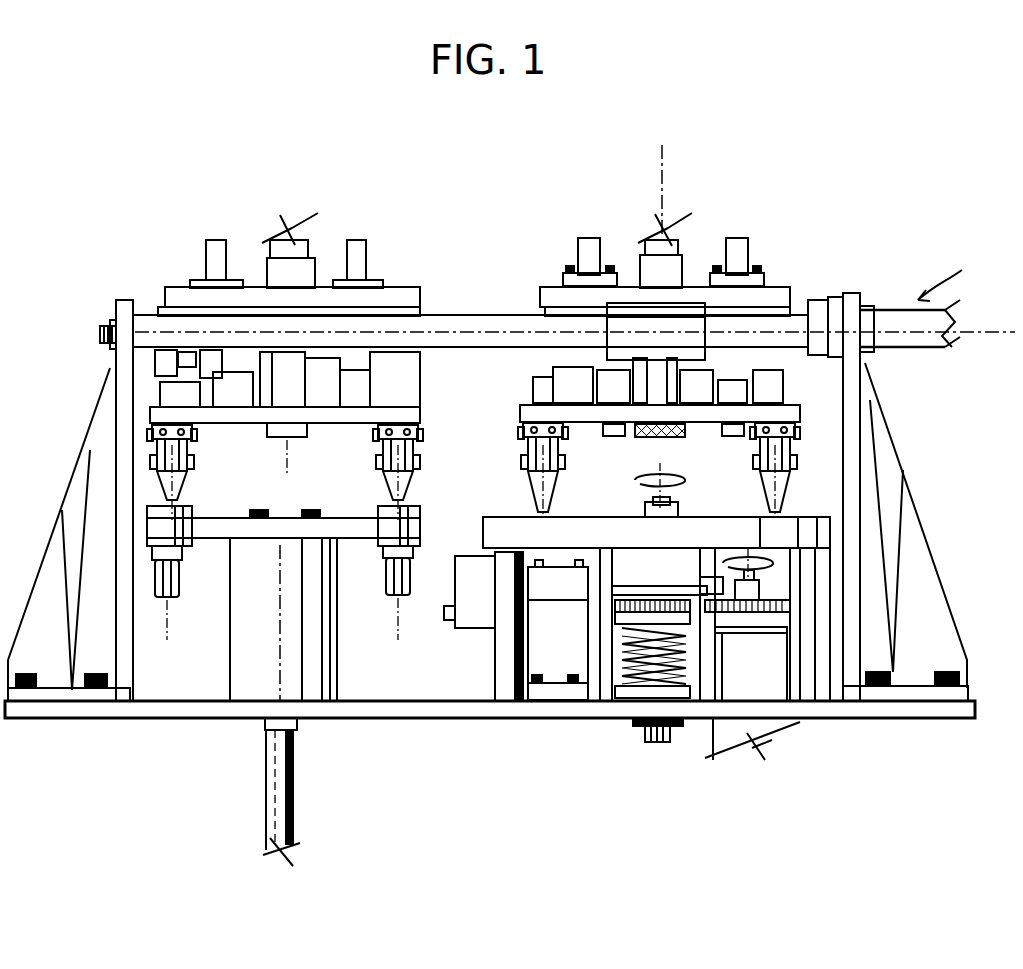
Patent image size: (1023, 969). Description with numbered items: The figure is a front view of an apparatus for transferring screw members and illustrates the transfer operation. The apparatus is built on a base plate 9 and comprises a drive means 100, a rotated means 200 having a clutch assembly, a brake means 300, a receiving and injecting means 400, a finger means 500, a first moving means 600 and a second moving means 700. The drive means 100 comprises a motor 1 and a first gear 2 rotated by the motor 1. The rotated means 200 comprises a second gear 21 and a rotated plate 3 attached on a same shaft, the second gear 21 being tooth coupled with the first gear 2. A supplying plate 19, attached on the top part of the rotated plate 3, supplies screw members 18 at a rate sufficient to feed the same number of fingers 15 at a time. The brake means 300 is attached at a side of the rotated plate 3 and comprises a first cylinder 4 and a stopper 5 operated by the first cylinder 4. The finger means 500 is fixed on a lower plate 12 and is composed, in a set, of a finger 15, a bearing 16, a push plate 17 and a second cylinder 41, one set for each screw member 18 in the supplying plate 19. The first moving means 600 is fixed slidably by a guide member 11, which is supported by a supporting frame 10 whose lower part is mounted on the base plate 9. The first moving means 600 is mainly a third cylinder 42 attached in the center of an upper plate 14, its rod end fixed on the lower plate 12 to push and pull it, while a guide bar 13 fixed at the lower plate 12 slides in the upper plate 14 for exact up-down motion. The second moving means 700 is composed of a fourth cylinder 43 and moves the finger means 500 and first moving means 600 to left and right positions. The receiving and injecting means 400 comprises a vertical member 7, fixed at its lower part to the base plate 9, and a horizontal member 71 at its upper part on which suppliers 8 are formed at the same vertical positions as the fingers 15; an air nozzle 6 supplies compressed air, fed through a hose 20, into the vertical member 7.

The motor 1 is at (710, 680).
The first gear 2 is at (730, 692).
The rotated plate 3 is at (607, 600).
The first cylinder 4 is at (472, 625).
The stopper 5 is at (560, 595).
The air nozzle 6 is at (275, 762).
The vertical member 7 is at (247, 687).
The suppliers 8 is at (388, 598).
The base plate 9 is at (73, 719).
The supporting frame 10 is at (845, 385).
The guide member 11 is at (527, 460).
The lower plate 12 is at (755, 412).
The guide bar 13 is at (735, 240).
The upper plate 14 is at (700, 290).
The finger 15 is at (533, 405).
The bearing 16 is at (600, 375).
The push plate 17 is at (556, 395).
The screw members 18 is at (778, 512).
The supplying plate 19 is at (790, 525).
The hose 20 is at (304, 798).
The second gear 21 is at (600, 612).
The second cylinder 41 is at (633, 362).
The third cylinder 42 is at (690, 285).
The fourth cylinder 43 is at (897, 313).
The horizontal member 71 is at (205, 530).
The drive means 100 is at (739, 708).
The rotated means 200 is at (647, 708).
The brake means 300 is at (514, 710).
The receiving and injecting means 400 is at (274, 706).
The finger means 500 is at (706, 310).
The first moving means 600 is at (625, 240).
The second moving means 700 is at (956, 271).